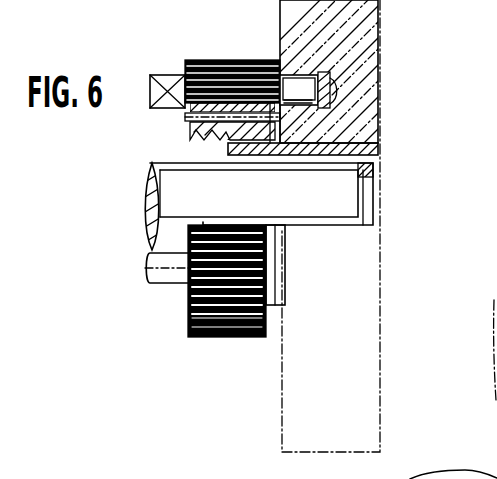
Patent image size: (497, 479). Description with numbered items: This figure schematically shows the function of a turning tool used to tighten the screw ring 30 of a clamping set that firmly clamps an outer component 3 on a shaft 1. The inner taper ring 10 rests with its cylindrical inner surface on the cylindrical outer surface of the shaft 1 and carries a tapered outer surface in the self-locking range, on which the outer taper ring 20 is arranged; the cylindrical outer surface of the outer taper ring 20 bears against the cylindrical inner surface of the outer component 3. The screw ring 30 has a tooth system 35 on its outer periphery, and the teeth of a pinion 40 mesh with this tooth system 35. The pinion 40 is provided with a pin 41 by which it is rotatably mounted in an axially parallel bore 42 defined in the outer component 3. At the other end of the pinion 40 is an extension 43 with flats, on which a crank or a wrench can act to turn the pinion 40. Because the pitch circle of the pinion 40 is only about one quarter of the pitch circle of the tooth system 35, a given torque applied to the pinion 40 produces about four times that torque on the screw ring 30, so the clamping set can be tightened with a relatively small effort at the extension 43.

The shaft 1 is at (156, 248).
The outer component 3 is at (368, 34).
The inner taper ring 10 is at (190, 161).
The outer taper ring 20 is at (383, 149).
The screw ring 30 is at (188, 318).
The tooth system 35 is at (228, 338).
The pinion 40 is at (221, 58).
The pin 41 is at (297, 77).
The axially parallel bore 42 is at (336, 78).
The extension 43 is at (157, 74).